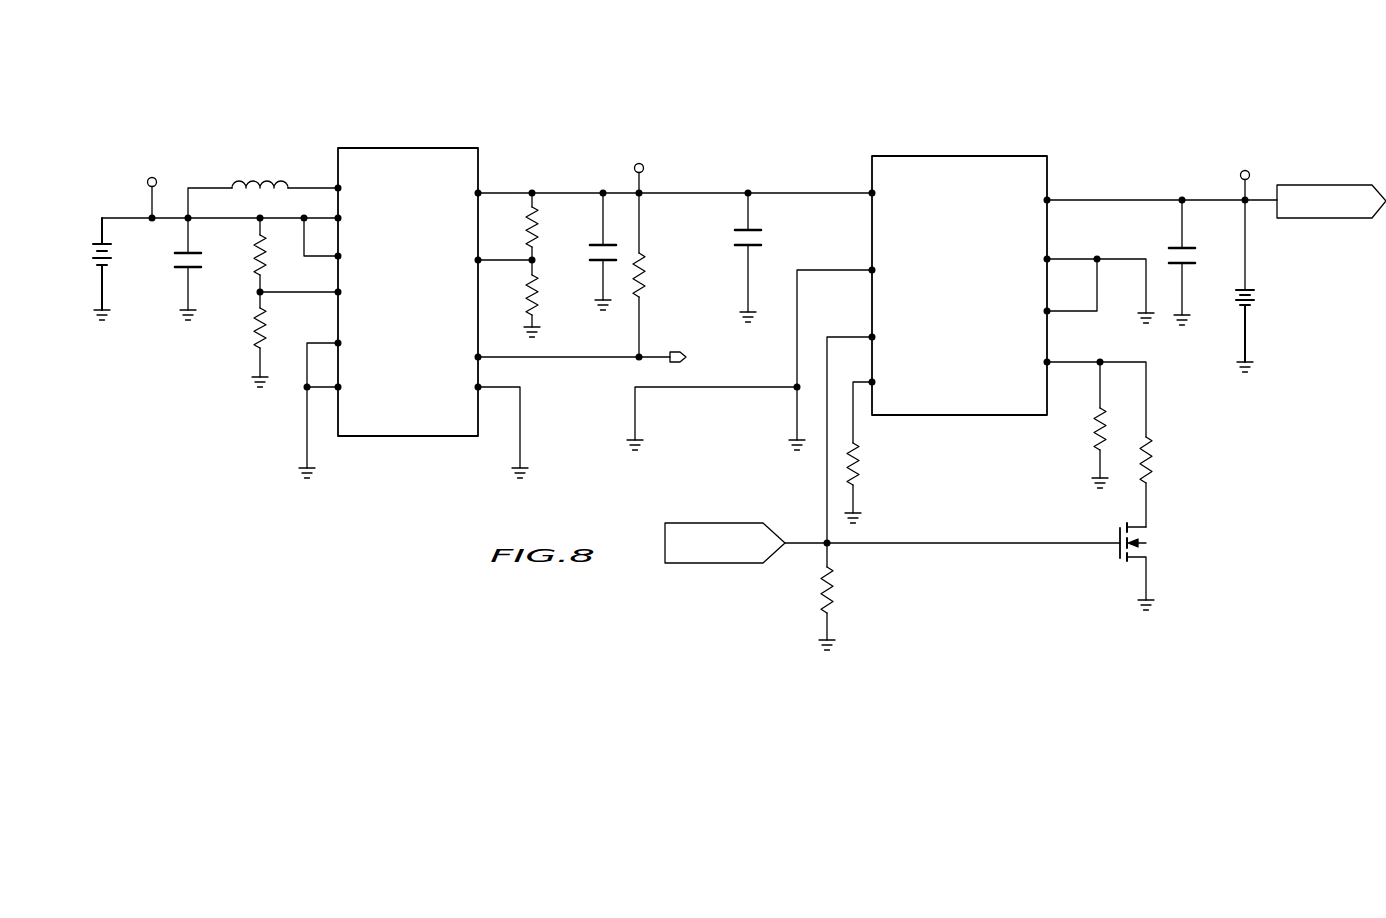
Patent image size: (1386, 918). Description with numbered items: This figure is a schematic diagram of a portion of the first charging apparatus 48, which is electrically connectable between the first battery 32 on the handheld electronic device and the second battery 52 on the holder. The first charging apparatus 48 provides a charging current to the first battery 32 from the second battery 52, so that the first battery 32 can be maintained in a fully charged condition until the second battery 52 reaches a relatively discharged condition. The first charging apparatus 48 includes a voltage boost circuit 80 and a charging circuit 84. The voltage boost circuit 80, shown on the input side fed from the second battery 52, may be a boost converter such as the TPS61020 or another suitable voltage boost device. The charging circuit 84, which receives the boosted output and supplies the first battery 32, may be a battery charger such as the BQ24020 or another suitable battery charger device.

The first charging apparatus 48 is at (622, 115).
The voltage boost circuit 80 is at (405, 148).
The charging circuit 84 is at (963, 156).
The second battery 52 is at (115, 255).
The first battery 32 is at (1241, 303).